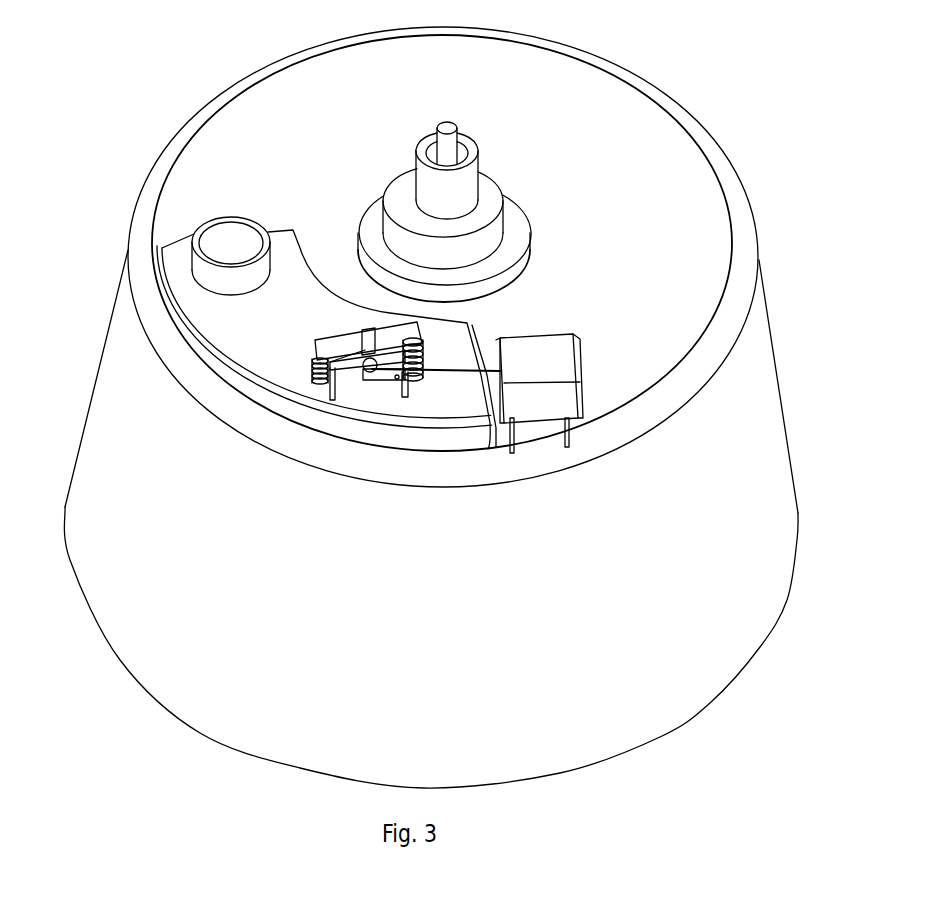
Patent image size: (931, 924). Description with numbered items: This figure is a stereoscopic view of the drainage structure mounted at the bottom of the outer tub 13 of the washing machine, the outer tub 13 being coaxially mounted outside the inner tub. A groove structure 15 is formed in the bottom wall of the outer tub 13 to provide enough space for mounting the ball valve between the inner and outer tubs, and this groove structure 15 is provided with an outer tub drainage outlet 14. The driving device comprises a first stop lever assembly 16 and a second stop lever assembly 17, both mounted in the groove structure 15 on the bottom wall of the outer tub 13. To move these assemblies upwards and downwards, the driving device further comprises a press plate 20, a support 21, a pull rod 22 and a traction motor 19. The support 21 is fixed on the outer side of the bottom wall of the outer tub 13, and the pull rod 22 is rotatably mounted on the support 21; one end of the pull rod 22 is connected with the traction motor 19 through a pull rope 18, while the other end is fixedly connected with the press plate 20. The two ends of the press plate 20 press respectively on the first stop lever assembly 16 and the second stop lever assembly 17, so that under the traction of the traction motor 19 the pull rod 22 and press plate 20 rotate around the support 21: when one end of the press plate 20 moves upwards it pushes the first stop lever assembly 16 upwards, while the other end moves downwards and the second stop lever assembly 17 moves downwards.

The outer tub 13 is at (250, 130).
The outer tub drainage outlet 14 is at (227, 243).
The groove structure 15 is at (258, 330).
The first stop lever assembly 16 is at (314, 371).
The second stop lever assembly 17 is at (423, 347).
The pull rope 18 is at (467, 372).
The traction motor 19 is at (543, 383).
The press plate 20 is at (330, 363).
The support 21 is at (364, 369).
The pull rod 22 is at (383, 378).